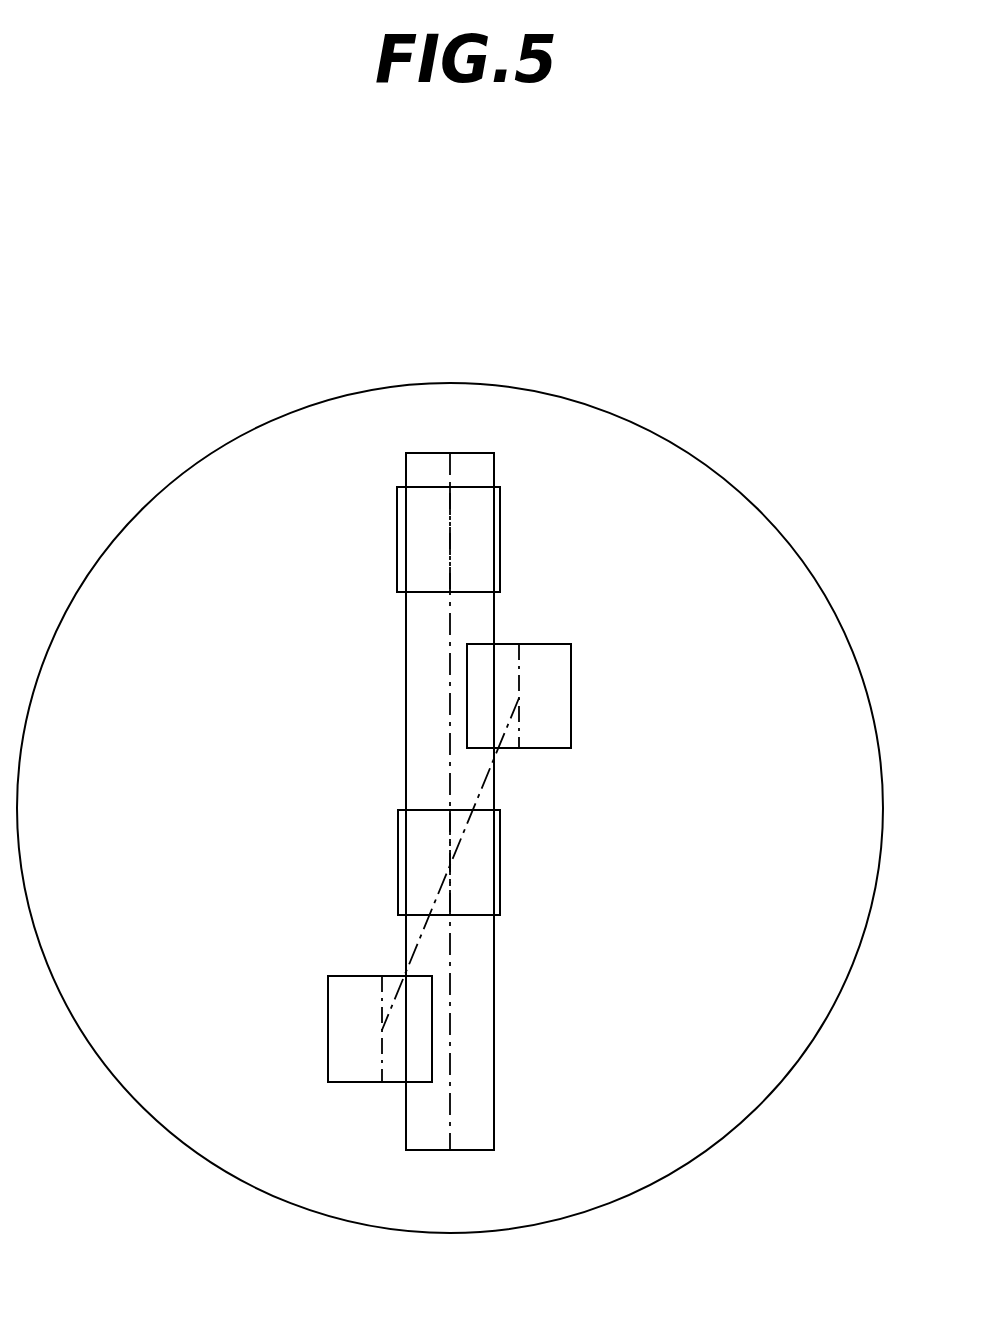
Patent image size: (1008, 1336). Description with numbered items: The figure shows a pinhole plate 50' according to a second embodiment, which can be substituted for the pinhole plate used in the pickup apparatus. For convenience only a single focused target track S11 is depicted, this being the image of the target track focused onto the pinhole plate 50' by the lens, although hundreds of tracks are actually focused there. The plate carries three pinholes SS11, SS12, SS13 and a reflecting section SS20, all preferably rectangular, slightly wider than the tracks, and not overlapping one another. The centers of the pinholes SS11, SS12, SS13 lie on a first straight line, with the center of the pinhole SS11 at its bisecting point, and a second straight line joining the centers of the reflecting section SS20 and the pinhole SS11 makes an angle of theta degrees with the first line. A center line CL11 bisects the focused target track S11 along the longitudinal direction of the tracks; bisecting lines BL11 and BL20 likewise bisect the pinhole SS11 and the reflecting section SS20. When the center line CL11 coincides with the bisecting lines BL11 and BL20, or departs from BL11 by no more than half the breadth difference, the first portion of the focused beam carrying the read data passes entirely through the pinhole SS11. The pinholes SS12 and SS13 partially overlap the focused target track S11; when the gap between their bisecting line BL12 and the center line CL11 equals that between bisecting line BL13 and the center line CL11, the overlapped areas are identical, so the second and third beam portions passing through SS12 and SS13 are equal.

The pinhole plate 50' is at (450, 800).
The focused target track S11 is at (470, 452).
The center line CL11 is at (450, 1123).
The reflecting section SS20 is at (500, 538).
The bisecting line BL20 is at (450, 563).
The pinhole SS13 is at (571, 694).
The bisecting line BL13 is at (519, 722).
The pinhole SS11 is at (500, 857).
The bisecting line BL11 is at (450, 887).
The pinhole SS12 is at (328, 1030).
The bisecting line BL12 is at (382, 1001).